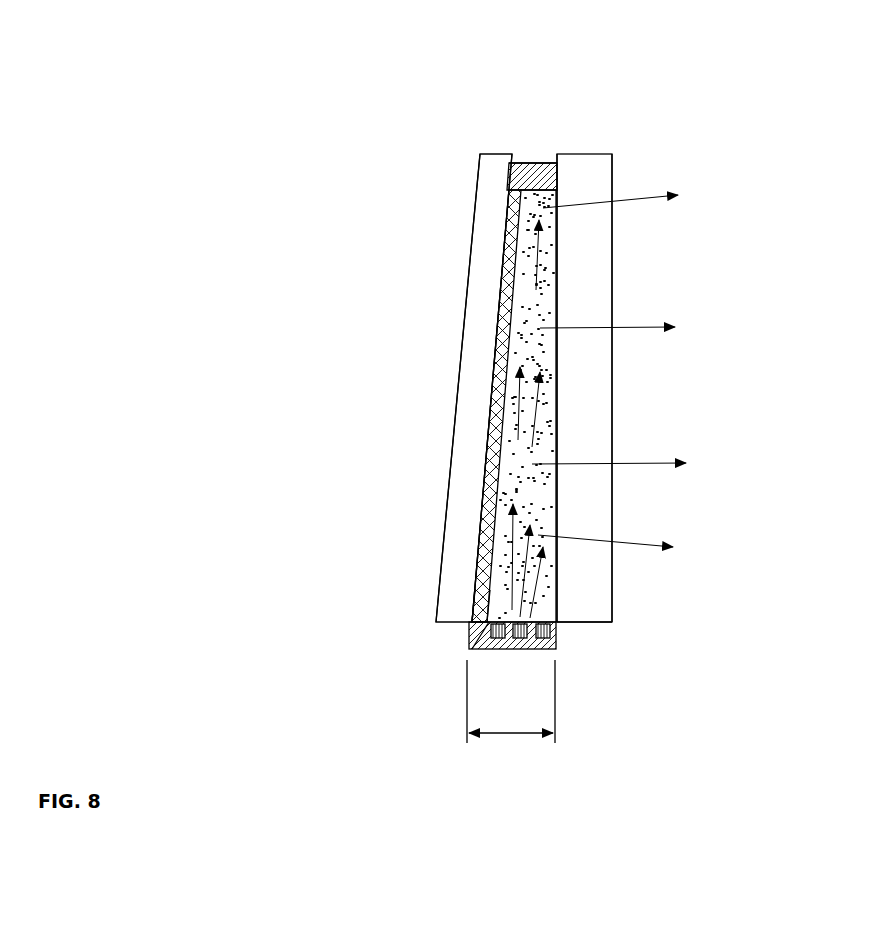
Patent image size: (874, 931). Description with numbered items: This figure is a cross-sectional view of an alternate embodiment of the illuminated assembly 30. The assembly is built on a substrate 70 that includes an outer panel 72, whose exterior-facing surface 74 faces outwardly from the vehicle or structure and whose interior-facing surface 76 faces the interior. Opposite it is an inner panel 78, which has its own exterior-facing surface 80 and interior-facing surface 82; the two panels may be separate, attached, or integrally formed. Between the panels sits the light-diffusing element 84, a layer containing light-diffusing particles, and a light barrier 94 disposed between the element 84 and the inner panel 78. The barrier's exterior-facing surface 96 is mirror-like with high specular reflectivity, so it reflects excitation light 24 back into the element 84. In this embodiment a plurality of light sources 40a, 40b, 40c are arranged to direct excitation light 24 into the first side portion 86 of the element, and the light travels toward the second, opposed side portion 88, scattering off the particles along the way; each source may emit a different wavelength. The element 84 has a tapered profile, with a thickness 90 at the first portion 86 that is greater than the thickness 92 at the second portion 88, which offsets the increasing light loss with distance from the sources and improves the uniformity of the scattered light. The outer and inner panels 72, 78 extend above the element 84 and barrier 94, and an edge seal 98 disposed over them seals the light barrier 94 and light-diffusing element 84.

The excitation light 24 is at (648, 196).
The illuminated assembly 30 is at (769, 568).
The first light source 40a is at (553, 633).
The second light source 40b is at (522, 650).
The third light source 40c is at (495, 648).
The substrate 70 is at (620, 150).
The outer panel 72 is at (602, 607).
The exterior-facing surface 74 is at (616, 582).
The interior-facing surface 76 is at (560, 246).
The inner panel 78 is at (455, 588).
The exterior-facing surface 80 is at (468, 608).
The interior-facing surface 82 is at (438, 560).
The light-diffusing element 84 is at (535, 349).
The first side portion 86 is at (473, 628).
The second opposed side portion 88 is at (557, 165).
The thickness 90 is at (512, 733).
The thickness 92 is at (555, 132).
The light barrier 94 is at (505, 248).
The exterior-facing surface 96 is at (502, 303).
The edge seal 98 is at (528, 175).